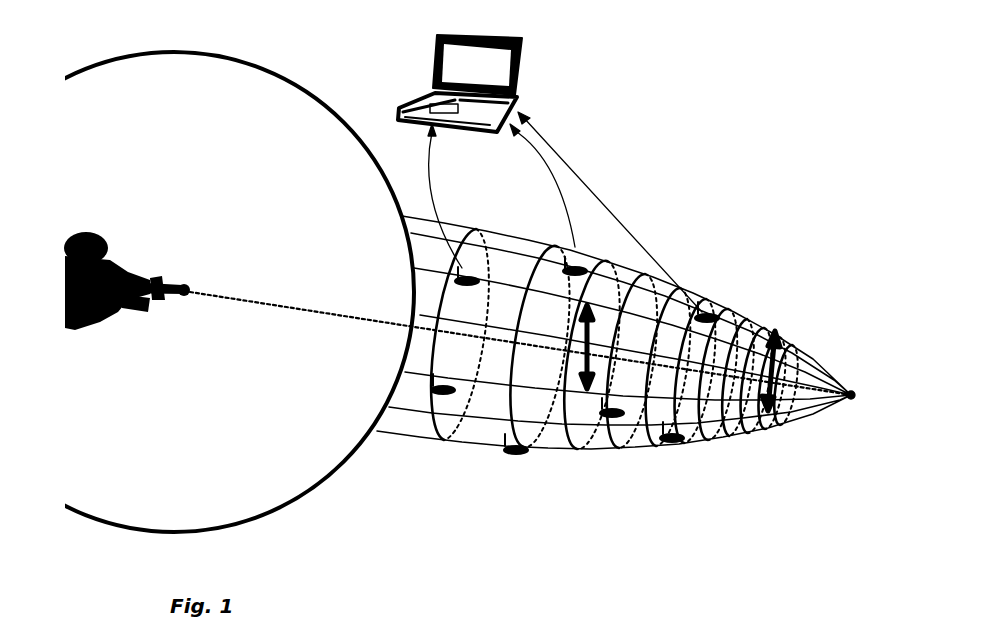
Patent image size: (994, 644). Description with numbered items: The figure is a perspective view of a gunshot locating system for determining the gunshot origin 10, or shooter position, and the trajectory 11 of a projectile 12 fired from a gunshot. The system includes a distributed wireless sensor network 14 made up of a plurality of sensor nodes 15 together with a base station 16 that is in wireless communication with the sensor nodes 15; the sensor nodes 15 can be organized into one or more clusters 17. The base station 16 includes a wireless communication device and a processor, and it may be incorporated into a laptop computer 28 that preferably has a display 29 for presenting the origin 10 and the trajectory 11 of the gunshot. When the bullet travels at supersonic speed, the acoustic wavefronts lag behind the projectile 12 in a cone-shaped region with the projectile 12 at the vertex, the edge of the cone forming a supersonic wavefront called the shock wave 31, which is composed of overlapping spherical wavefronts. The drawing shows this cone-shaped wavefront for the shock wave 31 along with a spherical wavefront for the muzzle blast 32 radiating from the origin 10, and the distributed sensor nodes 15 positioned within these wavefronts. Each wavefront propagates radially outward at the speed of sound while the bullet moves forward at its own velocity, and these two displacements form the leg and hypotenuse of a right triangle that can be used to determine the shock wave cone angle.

The gunshot origin 10 is at (186, 280).
The trajectory 11 is at (337, 333).
The projectile 12 is at (855, 392).
The distributed wireless sensor network 14 is at (765, 112).
The sensor nodes 15 is at (714, 316).
The base station 16 is at (486, 68).
The clusters 17 is at (688, 487).
The laptop computer 28 is at (432, 62).
The display 29 is at (475, 55).
The shock wave 31 is at (410, 445).
The muzzle blast 32 is at (288, 505).